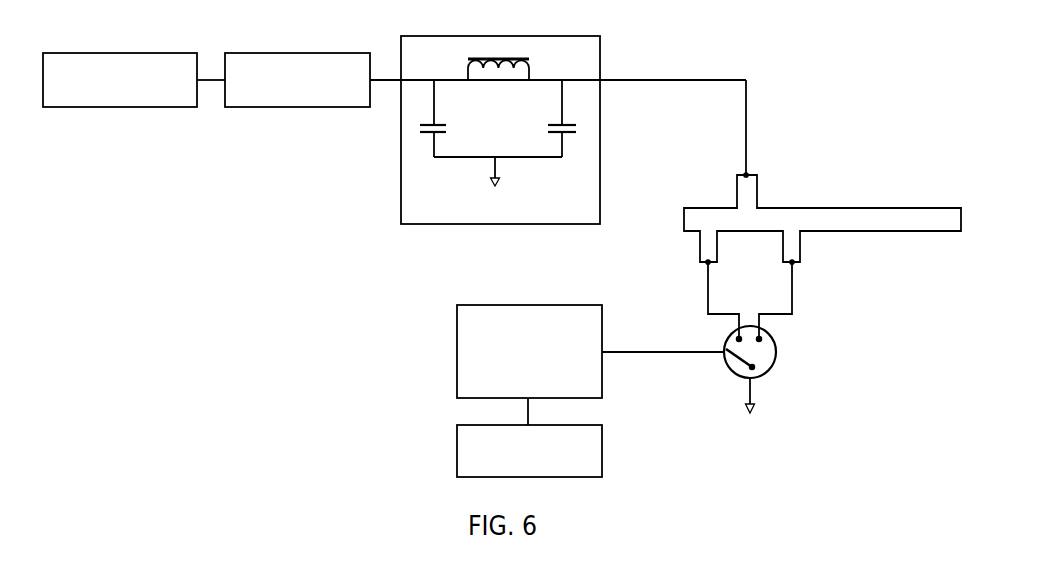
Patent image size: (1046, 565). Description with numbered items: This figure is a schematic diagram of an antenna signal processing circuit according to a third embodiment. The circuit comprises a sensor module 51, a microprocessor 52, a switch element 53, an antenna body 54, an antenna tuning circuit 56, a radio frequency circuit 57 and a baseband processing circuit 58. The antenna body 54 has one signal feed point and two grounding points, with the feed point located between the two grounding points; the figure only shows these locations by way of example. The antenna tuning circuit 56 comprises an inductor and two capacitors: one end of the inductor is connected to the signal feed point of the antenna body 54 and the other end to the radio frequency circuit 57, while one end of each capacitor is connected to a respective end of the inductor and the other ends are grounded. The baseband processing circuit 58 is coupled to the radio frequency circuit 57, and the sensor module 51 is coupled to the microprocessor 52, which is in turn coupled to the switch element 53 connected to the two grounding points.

The sensor module 51 is at (457, 450).
The microprocessor 52 is at (457, 352).
The switch element 53 is at (777, 350).
The antenna body 54 is at (875, 208).
The antenna tuning circuit 56 is at (600, 130).
The radio frequency circuit 57 is at (297, 53).
The baseband processing circuit 58 is at (120, 53).